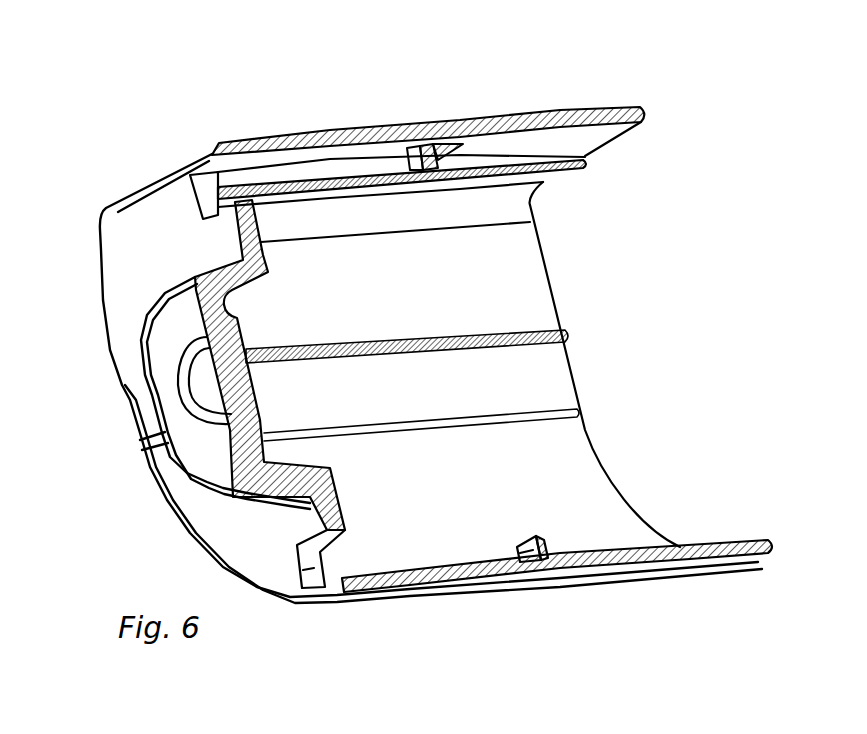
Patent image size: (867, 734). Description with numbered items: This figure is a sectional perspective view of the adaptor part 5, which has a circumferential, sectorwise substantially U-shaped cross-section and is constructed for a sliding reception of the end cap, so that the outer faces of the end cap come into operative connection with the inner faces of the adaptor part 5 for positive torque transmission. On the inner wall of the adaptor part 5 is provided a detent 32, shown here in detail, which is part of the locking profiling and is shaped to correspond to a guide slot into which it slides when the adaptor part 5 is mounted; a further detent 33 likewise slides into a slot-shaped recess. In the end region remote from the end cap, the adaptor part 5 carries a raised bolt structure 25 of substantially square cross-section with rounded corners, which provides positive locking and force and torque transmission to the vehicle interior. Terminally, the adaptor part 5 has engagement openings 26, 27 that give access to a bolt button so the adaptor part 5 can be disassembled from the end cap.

The adaptor part 5 is at (581, 142).
The bolt structure 25 is at (157, 375).
The engagement opening 26 is at (205, 193).
The engagement opening 27 is at (299, 550).
The detent 32 is at (410, 157).
The detent 33 is at (508, 572).